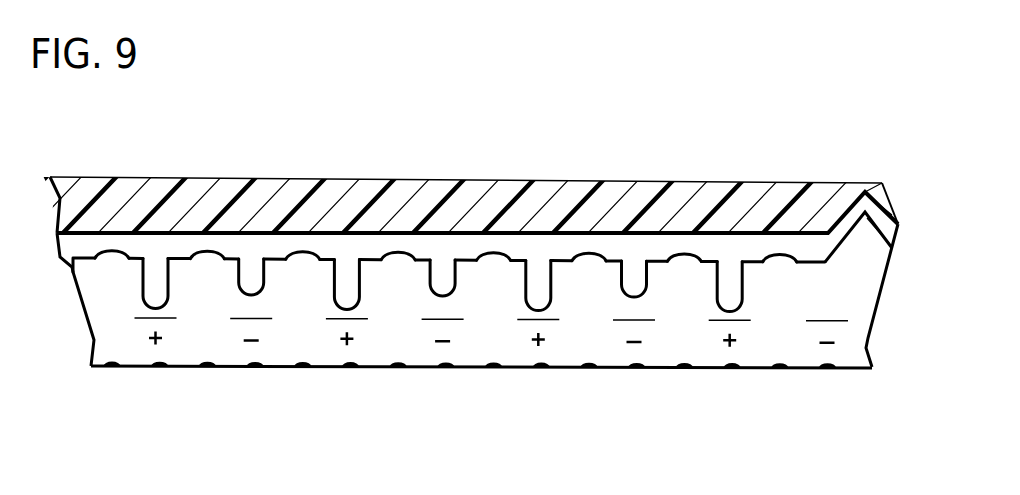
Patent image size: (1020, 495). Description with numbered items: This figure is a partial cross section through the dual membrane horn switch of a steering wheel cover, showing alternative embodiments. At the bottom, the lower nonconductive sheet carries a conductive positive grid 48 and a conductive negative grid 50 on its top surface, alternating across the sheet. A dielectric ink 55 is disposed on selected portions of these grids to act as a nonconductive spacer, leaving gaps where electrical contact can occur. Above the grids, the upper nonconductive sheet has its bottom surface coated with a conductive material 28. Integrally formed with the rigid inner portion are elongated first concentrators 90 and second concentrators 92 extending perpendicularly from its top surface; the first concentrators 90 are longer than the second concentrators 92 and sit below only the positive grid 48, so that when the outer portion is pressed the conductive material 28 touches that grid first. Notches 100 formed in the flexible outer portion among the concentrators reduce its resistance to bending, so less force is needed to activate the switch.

The conductive material 28 is at (653, 370).
The conductive positive grid 48 is at (138, 320).
The conductive negative grid 50 is at (265, 320).
The dielectric ink 55 is at (416, 365).
The first concentrators 90 is at (547, 277).
The second concentrators 92 is at (452, 273).
The notches 100 is at (122, 255).